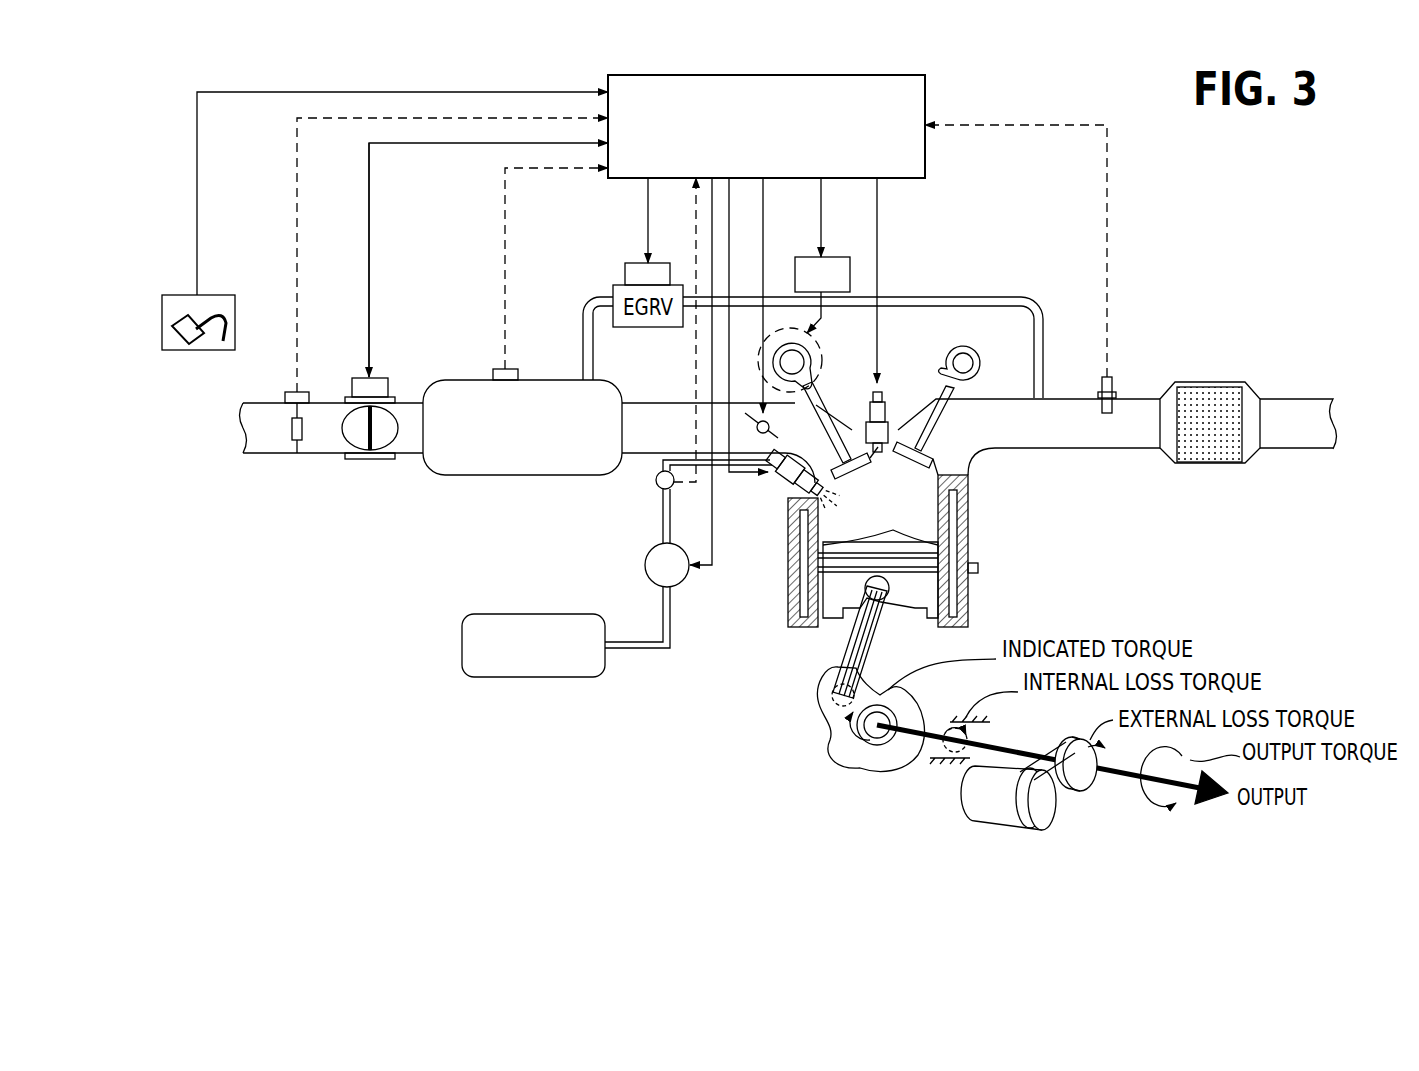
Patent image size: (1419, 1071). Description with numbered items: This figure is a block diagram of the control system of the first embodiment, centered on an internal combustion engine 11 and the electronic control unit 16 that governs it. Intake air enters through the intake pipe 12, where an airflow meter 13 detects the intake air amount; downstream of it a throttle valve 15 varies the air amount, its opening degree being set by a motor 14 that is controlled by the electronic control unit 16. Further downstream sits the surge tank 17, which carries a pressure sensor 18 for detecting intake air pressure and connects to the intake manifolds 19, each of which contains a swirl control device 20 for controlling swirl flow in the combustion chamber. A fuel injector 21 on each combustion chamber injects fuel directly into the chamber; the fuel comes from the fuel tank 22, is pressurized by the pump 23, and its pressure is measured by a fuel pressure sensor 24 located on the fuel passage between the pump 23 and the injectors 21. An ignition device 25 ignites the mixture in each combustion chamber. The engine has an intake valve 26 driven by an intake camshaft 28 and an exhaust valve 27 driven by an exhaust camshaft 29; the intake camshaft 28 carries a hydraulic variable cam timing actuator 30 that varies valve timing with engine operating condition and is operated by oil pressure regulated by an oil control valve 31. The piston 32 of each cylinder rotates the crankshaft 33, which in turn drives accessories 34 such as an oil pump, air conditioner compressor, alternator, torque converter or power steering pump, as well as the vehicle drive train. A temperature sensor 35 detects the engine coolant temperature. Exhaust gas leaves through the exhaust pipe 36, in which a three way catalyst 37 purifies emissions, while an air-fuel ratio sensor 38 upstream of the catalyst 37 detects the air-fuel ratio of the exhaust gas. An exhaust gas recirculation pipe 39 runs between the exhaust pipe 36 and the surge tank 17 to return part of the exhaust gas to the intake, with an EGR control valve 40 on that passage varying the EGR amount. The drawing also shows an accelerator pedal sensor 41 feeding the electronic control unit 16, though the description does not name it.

The internal combustion engine 11 is at (978, 525).
The intake pipe 12 is at (320, 455).
The airflow meter 13 is at (305, 390).
The motor 14 is at (380, 375).
The throttle valve 15 is at (397, 440).
The electronic control unit 16 is at (926, 100).
The surge tank 17 is at (520, 477).
The pressure sensor 18 is at (512, 368).
The intake manifolds 19 is at (647, 403).
The swirl control device 20 is at (746, 417).
The fuel injector 21 is at (793, 490).
The fuel tank 22 is at (526, 678).
The pump 23 is at (645, 565).
The fuel pressure sensor 24 is at (657, 484).
The ignition device 25 is at (886, 410).
The intake valve 26 is at (846, 432).
The exhaust valve 27 is at (935, 453).
The intake camshaft 28 is at (797, 360).
The exhaust camshaft 29 is at (967, 357).
The hydraulic variable cam timing actuator 30 is at (786, 326).
The oil control valve 31 is at (834, 256).
The piston 32 is at (922, 597).
The crankshaft 33 is at (866, 750).
The accessories 34 is at (980, 800).
The temperature sensor 35 is at (982, 568).
The exhaust pipe 36 is at (1108, 450).
The three way catalyst 37 is at (1212, 390).
The air-fuel ratio sensor 38 is at (1115, 378).
The exhaust gas recirculation pipe 39 is at (928, 296).
The EGR control valve 40 is at (630, 262).
The accelerator pedal sensor 41 is at (218, 293).